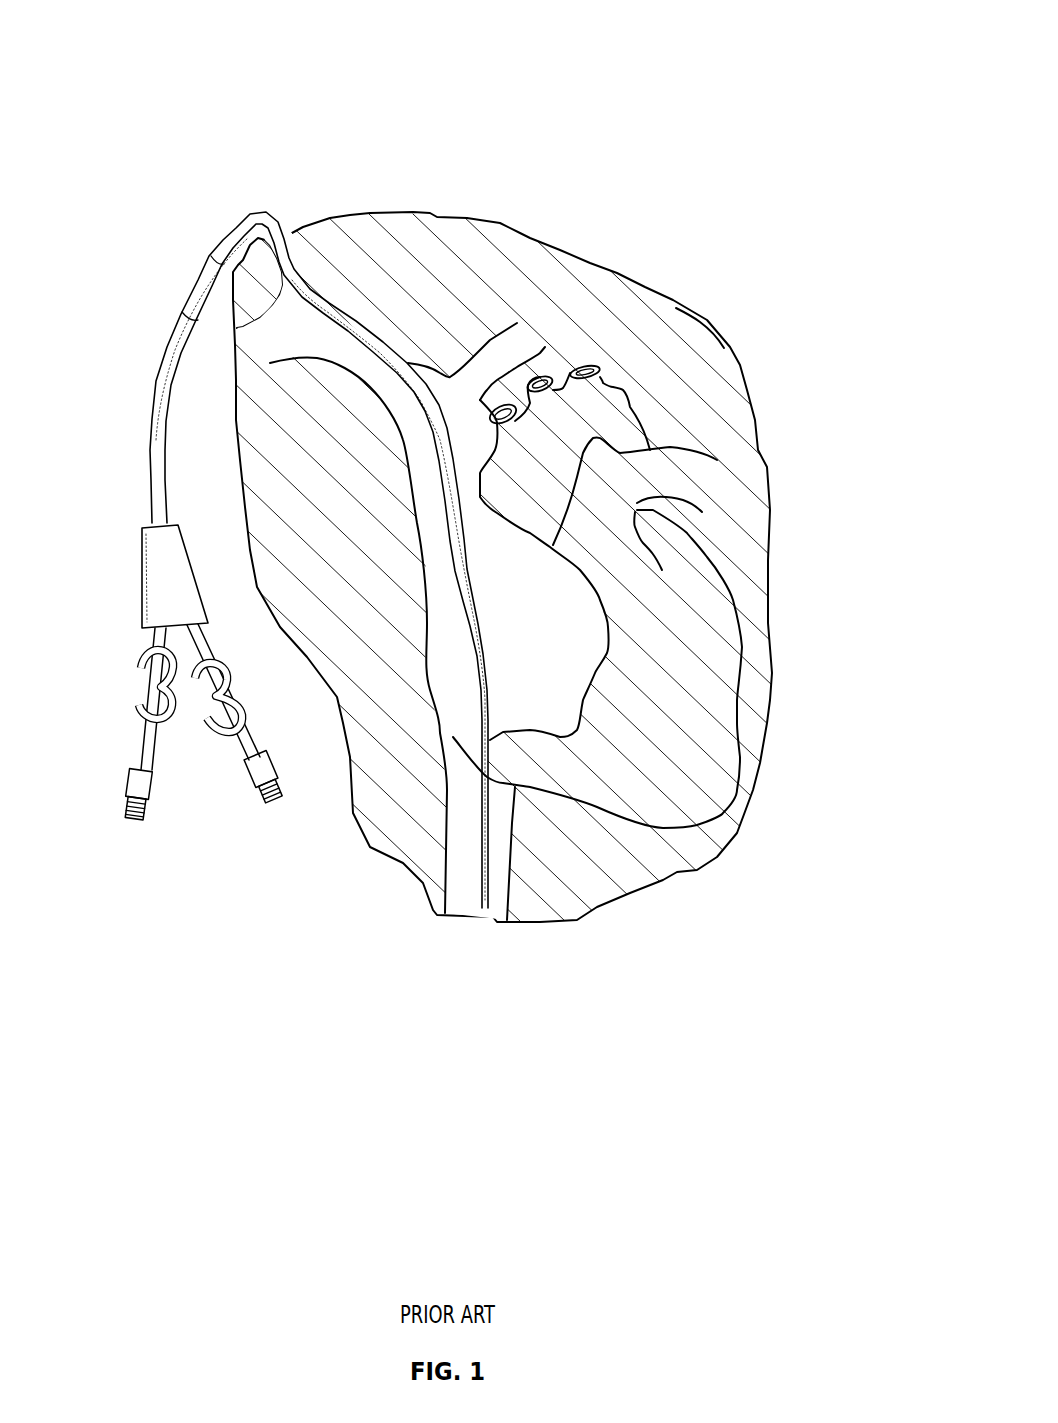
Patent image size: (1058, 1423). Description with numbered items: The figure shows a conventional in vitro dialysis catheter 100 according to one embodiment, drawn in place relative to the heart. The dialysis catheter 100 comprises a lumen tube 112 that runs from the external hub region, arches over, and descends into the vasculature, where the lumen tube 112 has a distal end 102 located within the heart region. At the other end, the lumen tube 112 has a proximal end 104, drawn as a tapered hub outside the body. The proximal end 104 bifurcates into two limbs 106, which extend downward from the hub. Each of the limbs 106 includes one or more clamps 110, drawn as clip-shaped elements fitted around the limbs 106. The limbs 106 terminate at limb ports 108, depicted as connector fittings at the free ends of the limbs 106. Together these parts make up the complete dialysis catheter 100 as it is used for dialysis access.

The dialysis catheter 100 is at (861, 68).
The distal end 102 is at (481, 616).
The proximal end 104 is at (129, 549).
The limbs 106 is at (197, 661).
The limb ports 108 is at (138, 792).
The clamps 110 is at (177, 719).
The lumen tube 112 is at (166, 366).